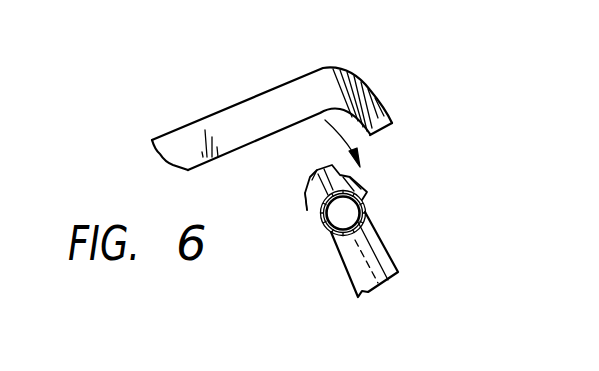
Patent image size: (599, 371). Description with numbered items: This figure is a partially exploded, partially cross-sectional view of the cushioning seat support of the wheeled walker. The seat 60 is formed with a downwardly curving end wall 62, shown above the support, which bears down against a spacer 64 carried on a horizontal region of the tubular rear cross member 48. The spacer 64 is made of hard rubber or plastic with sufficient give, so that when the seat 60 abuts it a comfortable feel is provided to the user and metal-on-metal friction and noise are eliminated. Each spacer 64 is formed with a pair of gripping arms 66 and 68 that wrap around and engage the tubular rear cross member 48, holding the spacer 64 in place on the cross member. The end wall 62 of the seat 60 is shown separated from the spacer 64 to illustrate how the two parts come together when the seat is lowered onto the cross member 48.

The seat 60 is at (250, 98).
The downwardly curving end wall 62 is at (382, 112).
The spacer 64 is at (345, 174).
The gripping arm 68 is at (364, 192).
The tubular rear cross member 48 is at (365, 212).
The gripping arm 66 is at (307, 212).